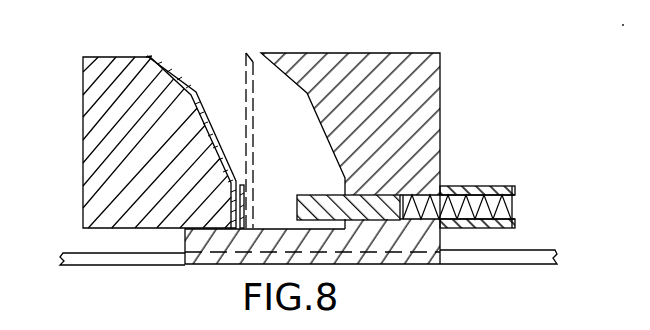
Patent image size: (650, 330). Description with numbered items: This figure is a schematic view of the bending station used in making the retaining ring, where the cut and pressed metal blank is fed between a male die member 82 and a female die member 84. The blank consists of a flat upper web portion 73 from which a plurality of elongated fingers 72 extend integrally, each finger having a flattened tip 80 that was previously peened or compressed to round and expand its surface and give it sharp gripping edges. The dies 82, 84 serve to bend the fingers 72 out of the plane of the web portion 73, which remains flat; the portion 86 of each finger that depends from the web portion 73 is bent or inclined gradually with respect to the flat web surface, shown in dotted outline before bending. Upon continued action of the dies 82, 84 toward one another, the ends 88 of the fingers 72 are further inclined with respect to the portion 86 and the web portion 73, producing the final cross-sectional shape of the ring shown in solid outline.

The elongated fingers 72 is at (218, 172).
The web portion 73 is at (230, 196).
The flattened tip 80 is at (152, 56).
The male die member 82 is at (93, 167).
The female die member 84 is at (432, 78).
The finger portion 86 is at (213, 147).
The finger ends 88 is at (190, 84).